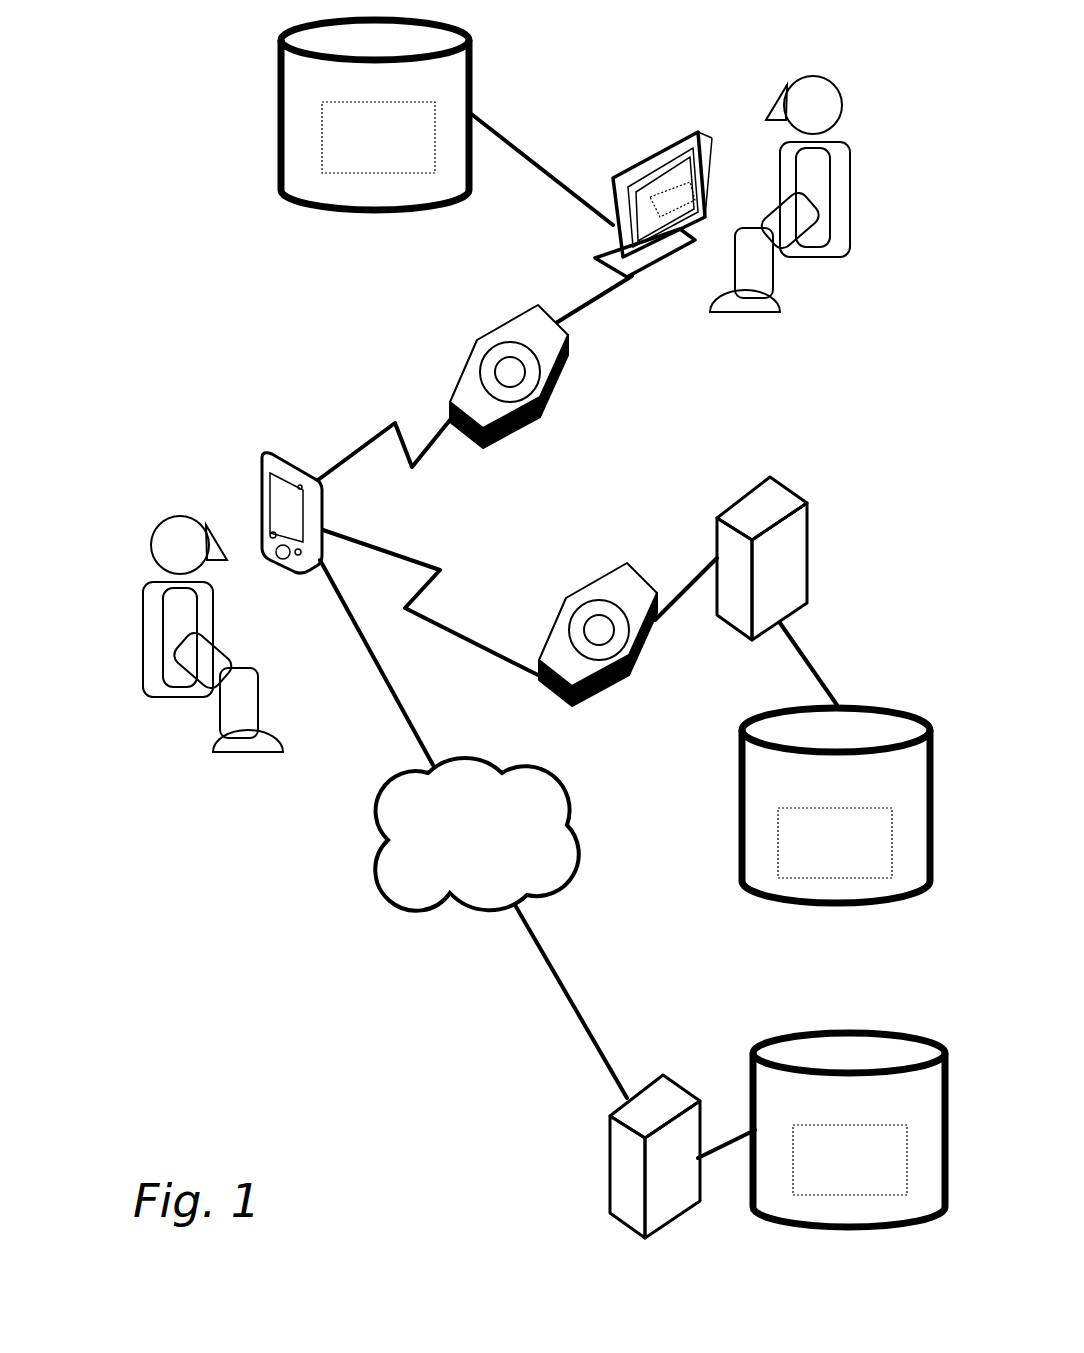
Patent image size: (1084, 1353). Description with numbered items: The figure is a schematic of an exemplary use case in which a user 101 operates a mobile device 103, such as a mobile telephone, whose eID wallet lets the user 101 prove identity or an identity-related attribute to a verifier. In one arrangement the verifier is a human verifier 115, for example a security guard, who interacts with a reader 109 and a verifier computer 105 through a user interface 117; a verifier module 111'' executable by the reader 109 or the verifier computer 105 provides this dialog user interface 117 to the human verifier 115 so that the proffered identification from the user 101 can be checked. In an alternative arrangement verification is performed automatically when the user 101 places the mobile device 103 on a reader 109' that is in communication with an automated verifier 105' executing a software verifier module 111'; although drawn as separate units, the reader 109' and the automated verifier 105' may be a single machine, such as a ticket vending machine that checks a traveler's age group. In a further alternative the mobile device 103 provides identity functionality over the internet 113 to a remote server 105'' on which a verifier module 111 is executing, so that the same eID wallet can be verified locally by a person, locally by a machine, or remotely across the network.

The user 101 is at (143, 630).
The mobile device 103 is at (270, 455).
The verifier computer 105 is at (617, 176).
The automated verifier 105' is at (822, 558).
The server 105'' is at (593, 1156).
The reader 109 is at (559, 376).
The reader 109' is at (644, 634).
The verifier module 111 is at (836, 838).
The software verifier module 111' is at (849, 1160).
The verifier module 111'' is at (375, 141).
The internet 113 is at (410, 900).
The human verifier 115 is at (815, 257).
The user interface 117 is at (677, 183).